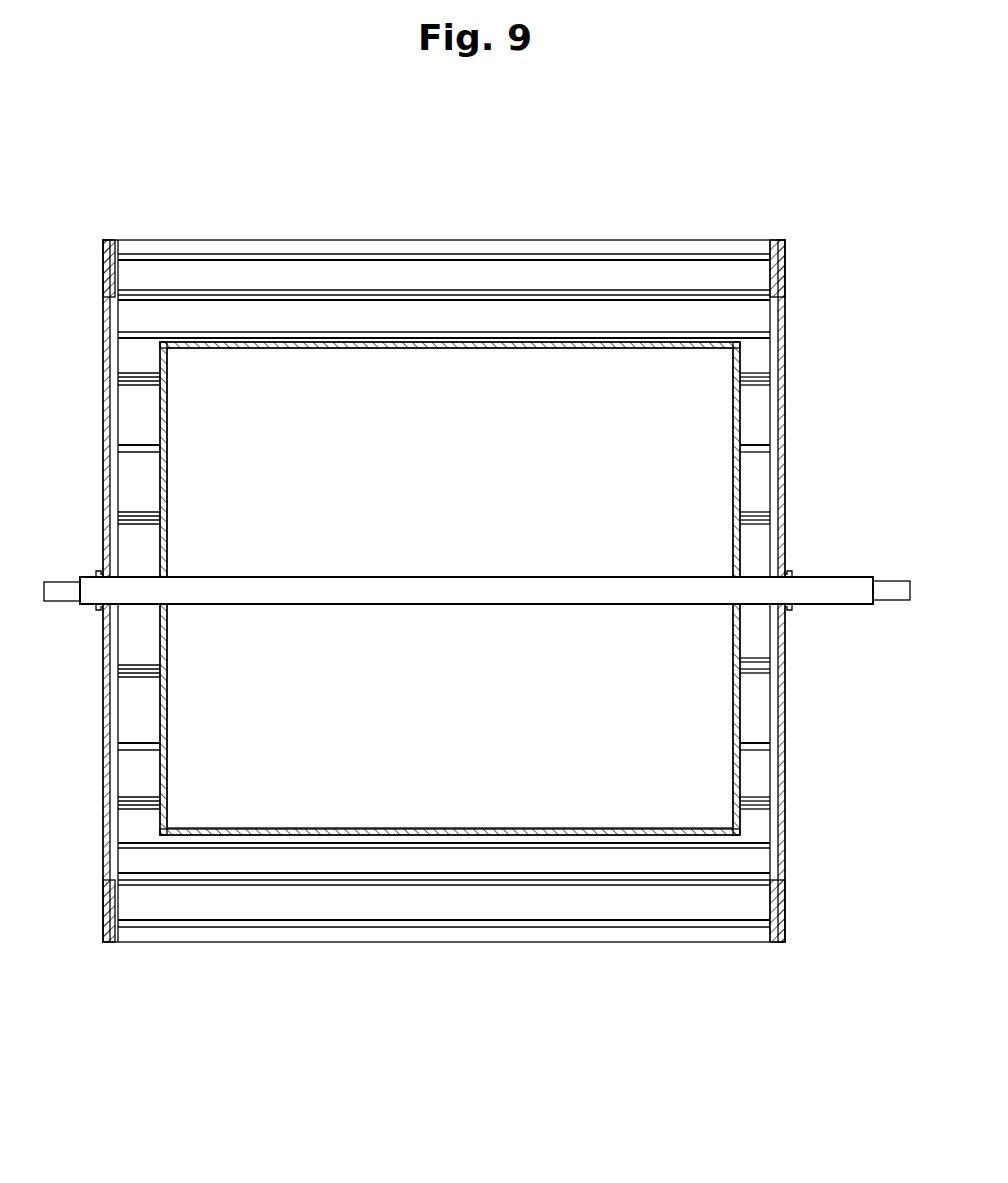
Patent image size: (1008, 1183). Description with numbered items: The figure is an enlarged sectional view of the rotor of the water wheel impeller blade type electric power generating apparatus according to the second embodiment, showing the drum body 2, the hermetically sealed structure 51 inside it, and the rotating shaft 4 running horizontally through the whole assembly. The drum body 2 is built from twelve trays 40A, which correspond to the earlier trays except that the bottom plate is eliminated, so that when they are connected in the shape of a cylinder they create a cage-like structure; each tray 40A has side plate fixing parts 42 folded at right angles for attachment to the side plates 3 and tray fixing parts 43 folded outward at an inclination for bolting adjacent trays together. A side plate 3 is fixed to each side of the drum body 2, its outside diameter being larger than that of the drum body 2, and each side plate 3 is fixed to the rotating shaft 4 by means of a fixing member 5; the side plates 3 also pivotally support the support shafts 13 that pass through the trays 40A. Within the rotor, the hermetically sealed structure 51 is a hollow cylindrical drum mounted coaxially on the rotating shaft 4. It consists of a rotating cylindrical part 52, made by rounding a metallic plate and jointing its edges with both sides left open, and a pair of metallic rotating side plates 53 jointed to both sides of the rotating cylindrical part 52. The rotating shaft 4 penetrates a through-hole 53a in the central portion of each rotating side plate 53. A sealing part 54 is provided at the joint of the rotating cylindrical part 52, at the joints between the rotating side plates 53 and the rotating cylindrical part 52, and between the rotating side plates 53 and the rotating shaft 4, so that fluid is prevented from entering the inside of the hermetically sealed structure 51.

The drum body 2 is at (810, 250).
The side plate 3 is at (103, 906).
The rotating shaft 4 is at (858, 581).
The fixing member 5 is at (95, 572).
The support shaft 13 is at (172, 256).
The tray 40A is at (657, 238).
The side plate fixing part 42 is at (775, 276).
The tray fixing part 43 is at (572, 290).
The hermetically sealed structure 51 is at (469, 339).
The rotating cylindrical part 52 is at (325, 340).
The rotating side plate 53 is at (160, 488).
The through-hole 53a is at (160, 605).
The sealing part 54 is at (163, 342).